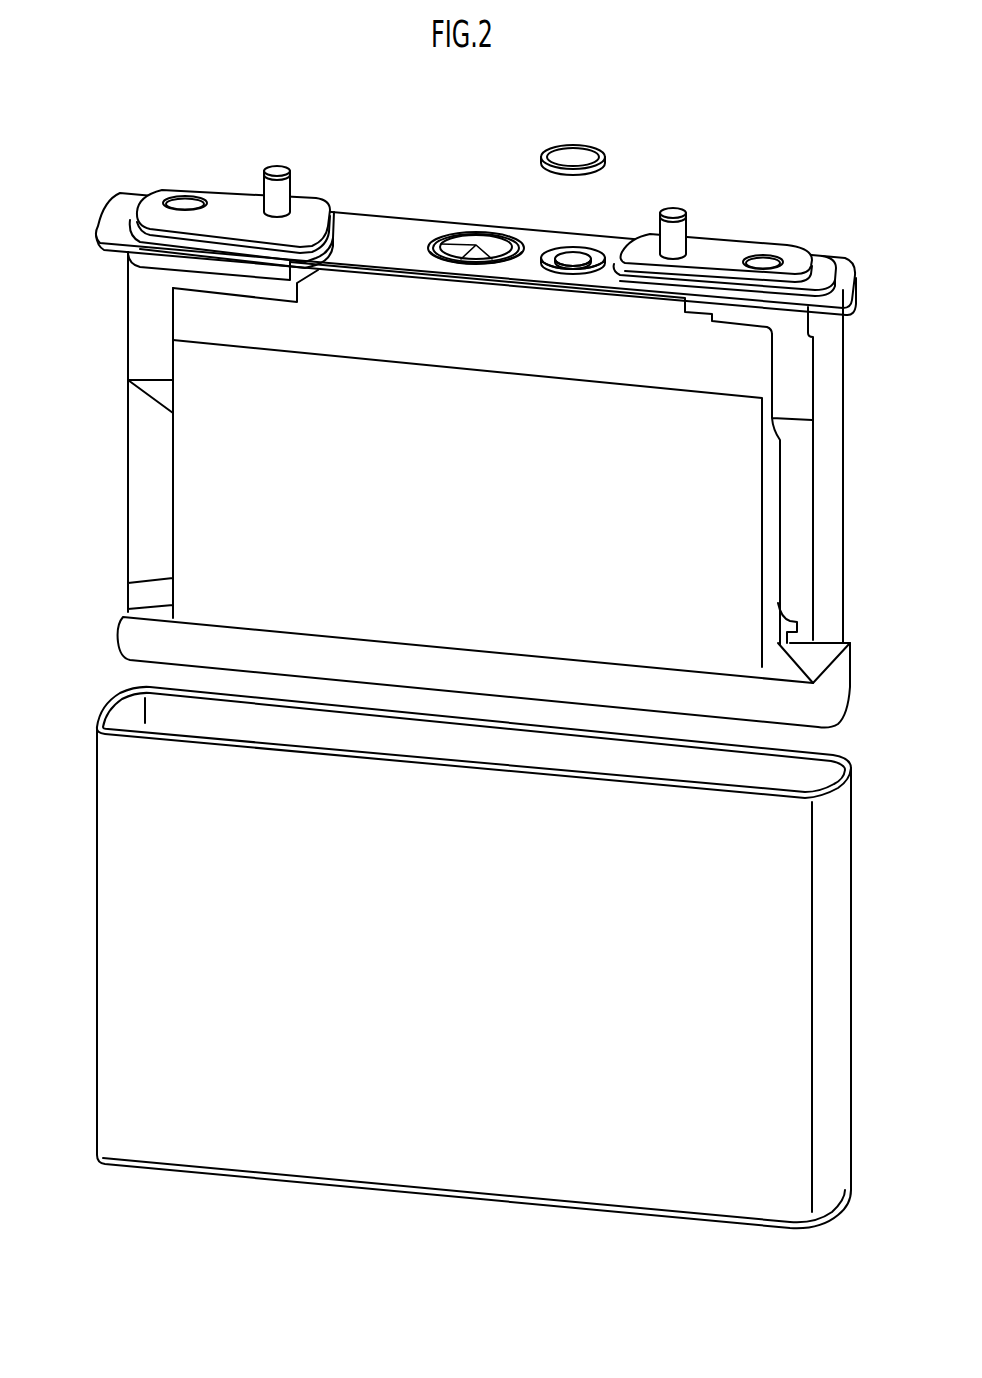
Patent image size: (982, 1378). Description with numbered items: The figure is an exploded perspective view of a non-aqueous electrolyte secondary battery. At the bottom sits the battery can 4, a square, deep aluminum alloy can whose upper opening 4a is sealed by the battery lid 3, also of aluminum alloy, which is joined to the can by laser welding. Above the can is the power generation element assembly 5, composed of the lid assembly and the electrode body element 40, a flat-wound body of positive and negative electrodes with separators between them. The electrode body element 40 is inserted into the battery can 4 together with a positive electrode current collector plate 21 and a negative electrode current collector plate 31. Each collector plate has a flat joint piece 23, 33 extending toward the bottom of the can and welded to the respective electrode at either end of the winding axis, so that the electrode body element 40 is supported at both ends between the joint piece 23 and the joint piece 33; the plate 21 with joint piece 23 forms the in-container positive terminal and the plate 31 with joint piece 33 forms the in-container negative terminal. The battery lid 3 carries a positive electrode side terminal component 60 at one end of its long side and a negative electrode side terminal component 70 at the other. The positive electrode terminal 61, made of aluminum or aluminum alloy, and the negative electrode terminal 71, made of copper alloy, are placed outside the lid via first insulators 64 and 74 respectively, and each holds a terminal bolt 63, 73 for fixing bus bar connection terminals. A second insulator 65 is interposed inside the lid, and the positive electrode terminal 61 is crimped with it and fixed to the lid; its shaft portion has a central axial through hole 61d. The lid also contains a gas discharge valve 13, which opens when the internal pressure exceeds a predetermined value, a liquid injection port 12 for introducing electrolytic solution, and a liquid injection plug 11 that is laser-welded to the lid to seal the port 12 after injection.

The battery lid 3 is at (395, 228).
The battery can 4 is at (453, 955).
The opening 4a is at (160, 715).
The power generation element assembly 5 is at (459, 490).
The liquid injection plug 11 is at (575, 148).
The liquid injection port 12 is at (581, 245).
The gas discharge valve 13 is at (477, 232).
The positive electrode current collector plate 21 is at (118, 365).
The joint piece 23 is at (135, 516).
The negative electrode current collector plate 31 is at (822, 398).
The joint piece 33 is at (800, 520).
The electrode body element 40 is at (57, 350).
The positive electrode side terminal component 60 is at (198, 174).
The positive electrode terminal 61 is at (238, 196).
The through hole 61d is at (187, 197).
The terminal bolt 63 is at (279, 166).
The first insulator 64 is at (137, 213).
The second insulator 65 is at (130, 249).
The negative electrode side terminal component 70 is at (754, 232).
The negative electrode terminal 71 is at (718, 243).
The terminal bolt 73 is at (672, 208).
The first insulator 74 is at (787, 290).